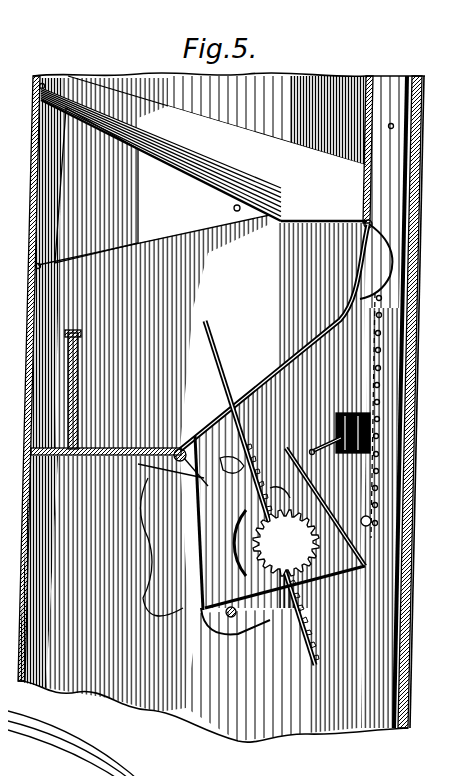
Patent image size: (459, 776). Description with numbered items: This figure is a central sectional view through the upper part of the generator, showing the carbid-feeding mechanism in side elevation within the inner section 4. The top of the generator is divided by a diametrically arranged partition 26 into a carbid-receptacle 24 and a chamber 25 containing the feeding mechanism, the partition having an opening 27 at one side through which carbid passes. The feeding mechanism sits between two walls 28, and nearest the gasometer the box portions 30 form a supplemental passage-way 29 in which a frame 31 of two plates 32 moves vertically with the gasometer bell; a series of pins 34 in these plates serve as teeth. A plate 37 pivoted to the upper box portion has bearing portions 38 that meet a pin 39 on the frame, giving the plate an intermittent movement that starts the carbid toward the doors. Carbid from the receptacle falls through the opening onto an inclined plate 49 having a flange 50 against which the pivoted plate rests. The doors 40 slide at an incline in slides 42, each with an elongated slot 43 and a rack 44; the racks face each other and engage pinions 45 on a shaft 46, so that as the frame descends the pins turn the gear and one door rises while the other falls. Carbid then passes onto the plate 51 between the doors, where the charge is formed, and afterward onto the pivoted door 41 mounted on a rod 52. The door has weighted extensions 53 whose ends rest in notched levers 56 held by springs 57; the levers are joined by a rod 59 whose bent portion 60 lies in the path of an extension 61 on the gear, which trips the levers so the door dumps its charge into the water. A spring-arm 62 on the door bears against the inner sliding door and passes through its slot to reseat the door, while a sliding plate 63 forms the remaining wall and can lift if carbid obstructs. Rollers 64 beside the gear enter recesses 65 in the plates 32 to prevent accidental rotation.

The inner section 4 is at (233, 716).
The carbid-receptacle 24 is at (217, 120).
The chamber containing the carbid-feeding mechanism 25 is at (112, 185).
The partition 26 is at (161, 154).
The opening 27 is at (322, 210).
The walls 28 is at (221, 407).
The supplemental chamber or passage-way 29 is at (398, 66).
The box portions 30 is at (347, 70).
The frame 31 is at (350, 684).
The plates 32 is at (341, 404).
The pins 34 is at (366, 378).
The plate 37 is at (355, 235).
The bearing portions 38 is at (377, 252).
The pin 39 is at (383, 122).
The doors 40 is at (214, 343).
The door 41 is at (130, 450).
The slides 42 is at (162, 547).
The elongated slot 43 is at (262, 522).
The rack 44 is at (315, 572).
The pinions 45 is at (286, 543).
The shaft 46 is at (275, 420).
The plate 49 is at (300, 330).
The flange 50 is at (346, 292).
The plate 51 is at (199, 427).
The rod 52 is at (167, 441).
The extensions 53 is at (233, 464).
The levers 56 is at (310, 380).
The springs 57 is at (372, 361).
The rod 59 is at (324, 431).
The bent portion 60 is at (309, 441).
The extension 61 is at (200, 592).
The spring-arm 62 is at (173, 472).
The sliding plate 63 is at (72, 378).
The rollers 64 is at (328, 507).
The recesses 65 is at (370, 545).